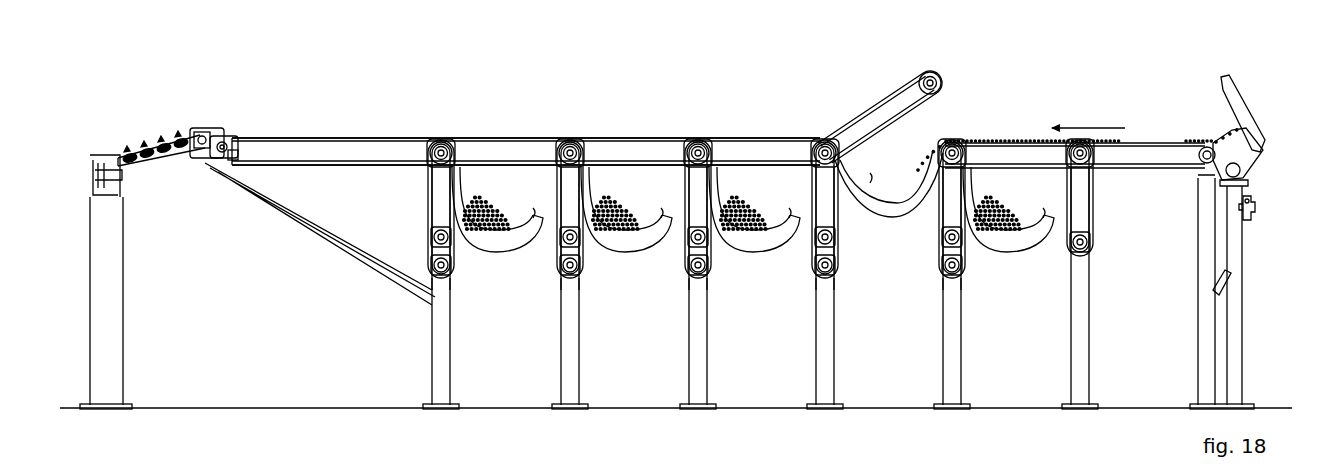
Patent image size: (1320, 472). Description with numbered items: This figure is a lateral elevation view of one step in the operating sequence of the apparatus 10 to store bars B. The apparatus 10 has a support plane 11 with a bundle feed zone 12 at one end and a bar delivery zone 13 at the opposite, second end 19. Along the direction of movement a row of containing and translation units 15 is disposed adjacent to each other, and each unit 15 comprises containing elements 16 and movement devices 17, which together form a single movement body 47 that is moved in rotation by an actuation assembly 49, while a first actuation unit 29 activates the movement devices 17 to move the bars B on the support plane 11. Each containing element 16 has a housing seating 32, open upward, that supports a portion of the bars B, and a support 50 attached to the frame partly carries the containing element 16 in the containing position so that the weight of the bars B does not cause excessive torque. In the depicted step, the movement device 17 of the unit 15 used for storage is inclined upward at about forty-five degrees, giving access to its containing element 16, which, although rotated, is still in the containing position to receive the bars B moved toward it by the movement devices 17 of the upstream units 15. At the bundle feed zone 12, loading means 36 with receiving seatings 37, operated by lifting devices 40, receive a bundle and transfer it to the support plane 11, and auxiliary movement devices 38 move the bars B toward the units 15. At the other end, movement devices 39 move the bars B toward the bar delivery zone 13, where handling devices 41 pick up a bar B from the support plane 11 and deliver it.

The apparatus to store bars 10 is at (1164, 62).
The support plane 11 is at (343, 128).
The bundle feed zone 12 is at (1208, 132).
The bar delivery zone 13 is at (196, 128).
The containing and translation unit 15 is at (513, 355).
The containing element 16 is at (466, 172).
The movement device 17 is at (488, 152).
The second end of the support plane 19 is at (280, 137).
The first actuation unit 29 is at (430, 238).
The housing seating 32 is at (533, 220).
The loading means 36 is at (1256, 126).
The receiving seating 37 is at (1240, 134).
The auxiliary movement device 38 is at (1182, 202).
The auxiliary movement device 39 is at (272, 172).
The lifting device 40 is at (1252, 212).
The handling device 41 is at (233, 125).
The movement body 47 is at (478, 135).
The actuation assembly 49 is at (438, 284).
The support 50 is at (549, 231).
The bars B is at (516, 215).